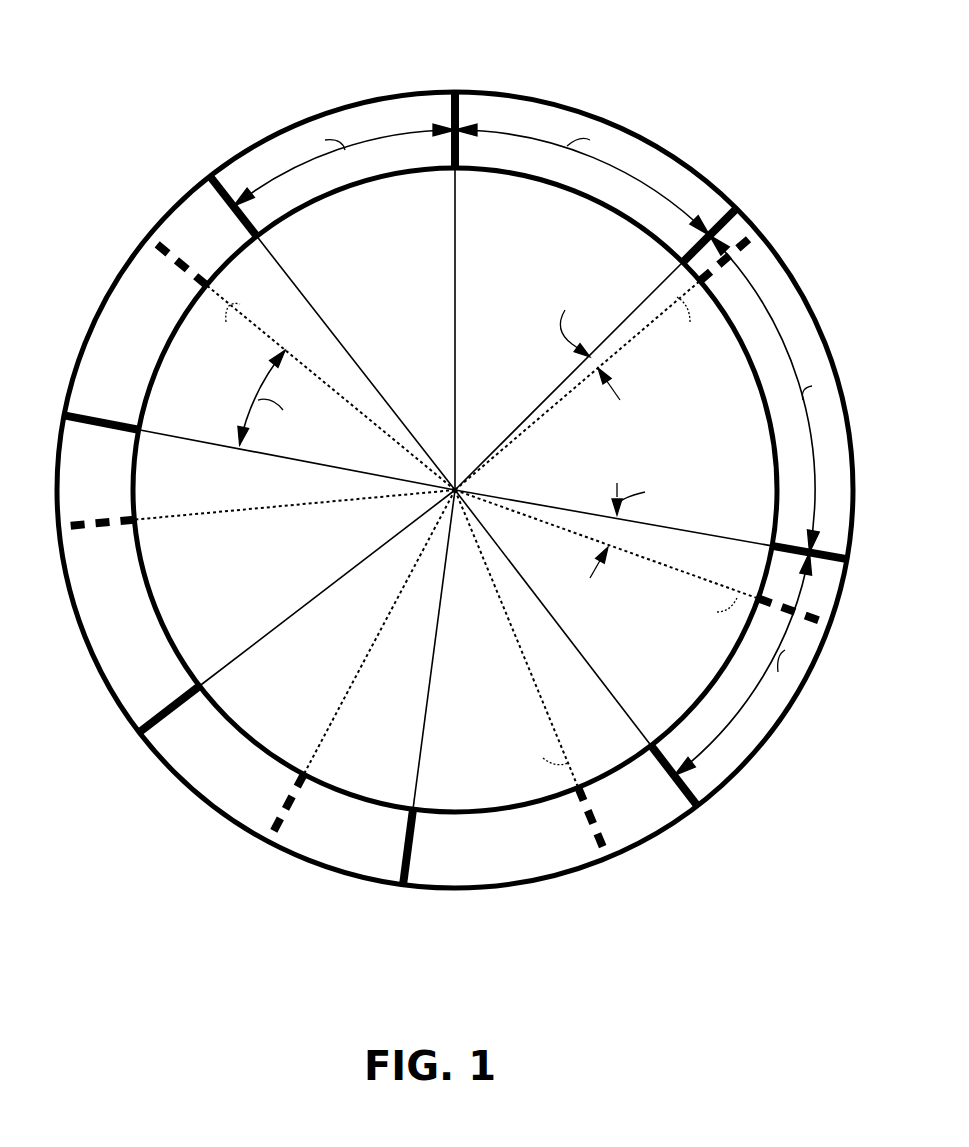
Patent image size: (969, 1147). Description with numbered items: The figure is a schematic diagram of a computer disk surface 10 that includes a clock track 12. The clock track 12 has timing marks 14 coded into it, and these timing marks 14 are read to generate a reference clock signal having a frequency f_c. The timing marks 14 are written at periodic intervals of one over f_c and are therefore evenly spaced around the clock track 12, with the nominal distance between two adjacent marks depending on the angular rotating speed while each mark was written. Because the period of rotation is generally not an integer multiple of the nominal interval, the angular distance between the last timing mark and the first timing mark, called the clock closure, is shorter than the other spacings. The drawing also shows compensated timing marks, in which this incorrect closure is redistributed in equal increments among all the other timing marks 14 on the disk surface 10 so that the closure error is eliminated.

The disk surface 10 is at (120, 57).
The clock track 12 is at (495, 888).
The timing marks 14 is at (224, 190).